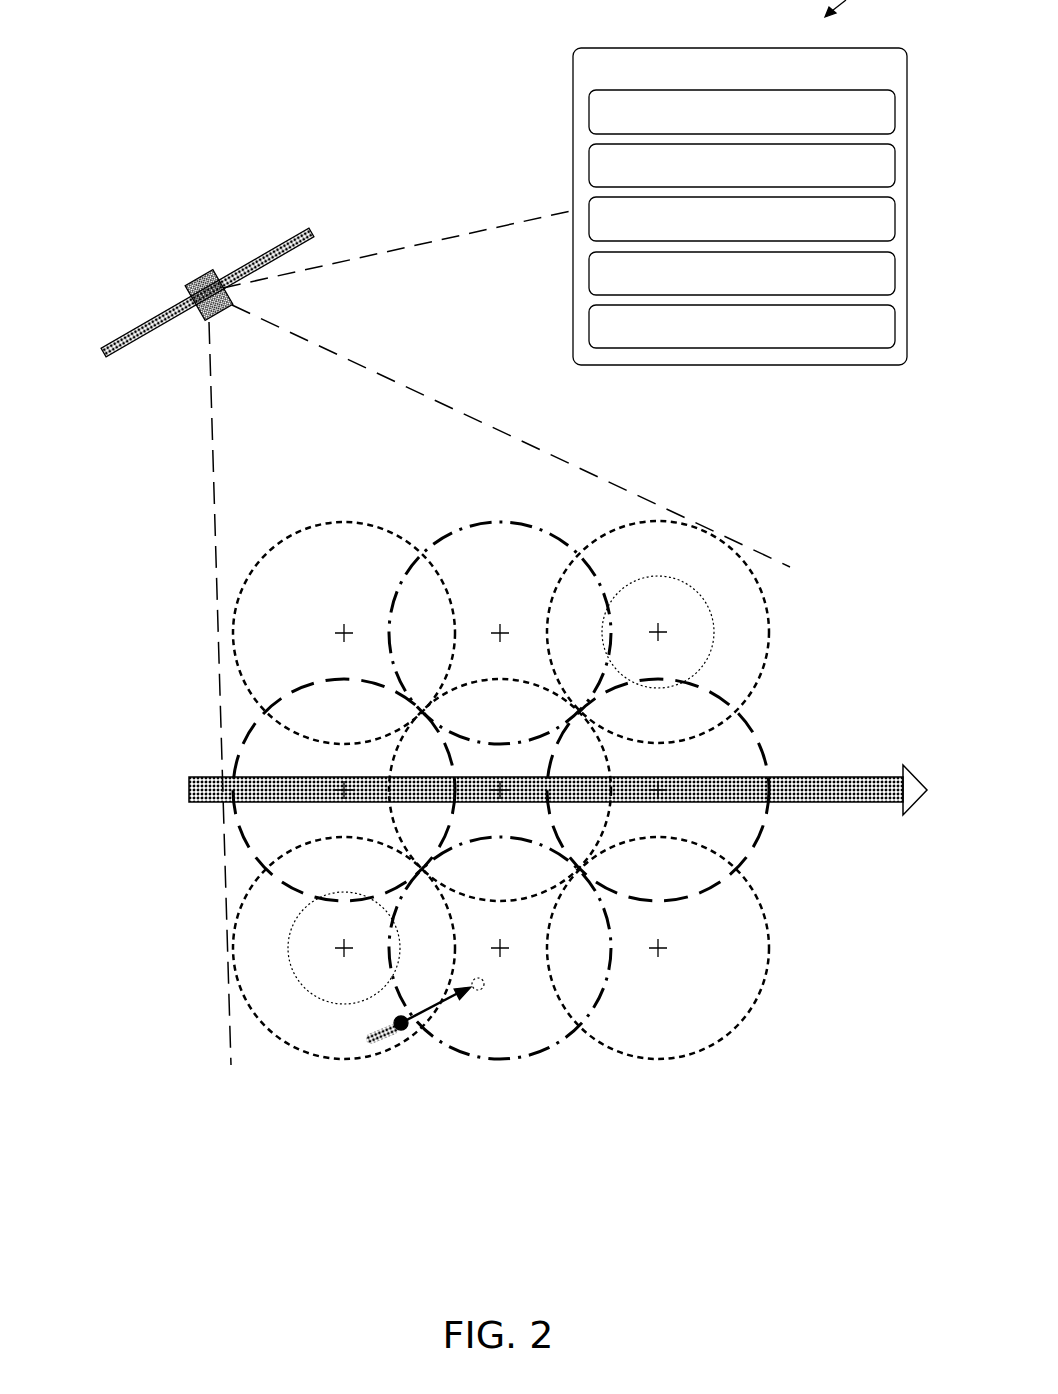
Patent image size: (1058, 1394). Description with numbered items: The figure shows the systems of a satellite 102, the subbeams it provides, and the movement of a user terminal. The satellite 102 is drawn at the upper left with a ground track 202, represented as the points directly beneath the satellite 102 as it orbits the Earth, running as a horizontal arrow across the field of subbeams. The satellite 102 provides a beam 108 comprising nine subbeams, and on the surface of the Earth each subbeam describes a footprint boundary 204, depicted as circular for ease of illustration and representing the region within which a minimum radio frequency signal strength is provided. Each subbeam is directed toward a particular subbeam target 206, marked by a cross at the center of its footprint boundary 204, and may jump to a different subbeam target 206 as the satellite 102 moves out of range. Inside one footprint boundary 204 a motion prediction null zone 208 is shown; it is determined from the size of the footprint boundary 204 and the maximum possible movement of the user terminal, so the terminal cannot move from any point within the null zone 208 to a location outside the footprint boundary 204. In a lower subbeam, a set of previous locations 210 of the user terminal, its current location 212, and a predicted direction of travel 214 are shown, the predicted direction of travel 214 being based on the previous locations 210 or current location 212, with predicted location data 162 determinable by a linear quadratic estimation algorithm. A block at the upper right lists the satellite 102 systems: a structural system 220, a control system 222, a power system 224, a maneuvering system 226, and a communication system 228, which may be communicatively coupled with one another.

The satellite 102 is at (504, 556).
The beam 108 is at (370, 368).
The predicted location data 162 is at (482, 990).
The ground track 202 is at (488, 776).
The footprint boundary 204 is at (770, 617).
The subbeam target 206 is at (660, 634).
The motion prediction null zone 208 is at (683, 582).
The previous locations 210 is at (375, 1032).
The current location 212 is at (398, 1032).
The predicted direction of travel 214 is at (440, 1002).
The structural system 220 is at (742, 112).
The control system 222 is at (742, 165).
The power system 224 is at (742, 219).
The maneuvering system 226 is at (742, 273).
The communication system 228 is at (742, 326).